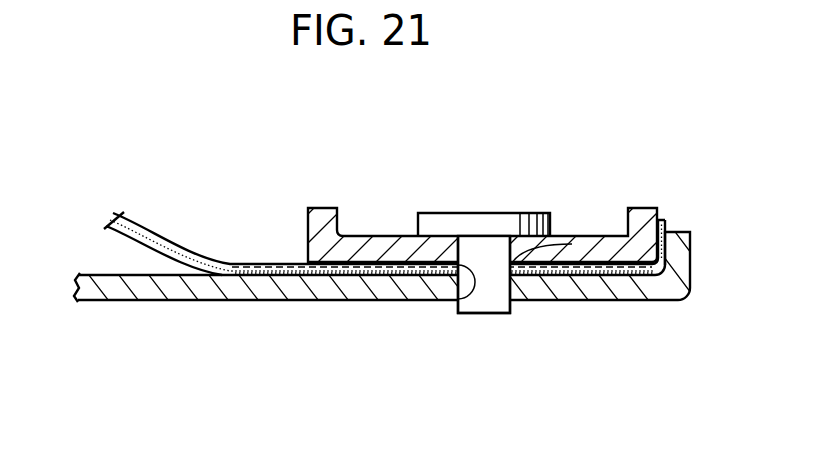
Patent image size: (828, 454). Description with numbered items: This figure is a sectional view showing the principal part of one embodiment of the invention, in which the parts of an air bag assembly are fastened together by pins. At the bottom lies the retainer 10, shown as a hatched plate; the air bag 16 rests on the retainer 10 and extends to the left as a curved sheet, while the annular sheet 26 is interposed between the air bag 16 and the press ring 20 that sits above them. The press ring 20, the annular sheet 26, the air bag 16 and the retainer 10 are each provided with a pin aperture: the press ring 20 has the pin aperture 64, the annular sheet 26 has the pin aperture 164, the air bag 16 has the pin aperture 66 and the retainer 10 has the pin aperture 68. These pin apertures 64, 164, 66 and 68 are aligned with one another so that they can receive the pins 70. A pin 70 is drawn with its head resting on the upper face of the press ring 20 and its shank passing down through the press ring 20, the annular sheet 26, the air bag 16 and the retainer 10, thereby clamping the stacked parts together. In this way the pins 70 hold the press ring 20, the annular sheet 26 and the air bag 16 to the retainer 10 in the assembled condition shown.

The retainer 10 is at (148, 300).
The air bag 16 is at (152, 232).
The press ring 20 is at (360, 236).
The annular sheet 26 is at (293, 265).
The pin aperture 64 is at (597, 263).
The pin aperture 66 is at (582, 265).
The pin aperture 68 is at (557, 264).
The pin 70 is at (498, 213).
The pin aperture 164 is at (458, 308).